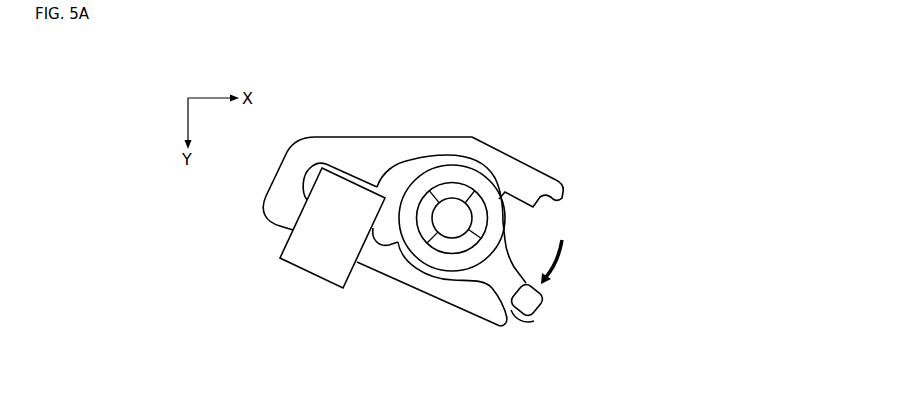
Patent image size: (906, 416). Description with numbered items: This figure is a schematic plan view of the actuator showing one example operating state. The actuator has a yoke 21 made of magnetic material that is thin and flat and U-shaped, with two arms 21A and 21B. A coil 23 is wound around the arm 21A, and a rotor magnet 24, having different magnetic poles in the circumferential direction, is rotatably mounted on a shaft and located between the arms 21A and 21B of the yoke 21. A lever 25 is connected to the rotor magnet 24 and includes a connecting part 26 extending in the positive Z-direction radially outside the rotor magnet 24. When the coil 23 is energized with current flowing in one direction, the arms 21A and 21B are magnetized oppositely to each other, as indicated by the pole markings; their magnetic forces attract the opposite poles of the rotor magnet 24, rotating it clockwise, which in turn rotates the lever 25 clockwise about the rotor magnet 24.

The yoke 21 is at (334, 104).
The arm 21A is at (487, 313).
The arm 21B is at (534, 178).
The coil 23 is at (310, 271).
The rotor magnet 24 is at (433, 253).
The lever 25 is at (518, 230).
The connecting part 26 is at (541, 296).